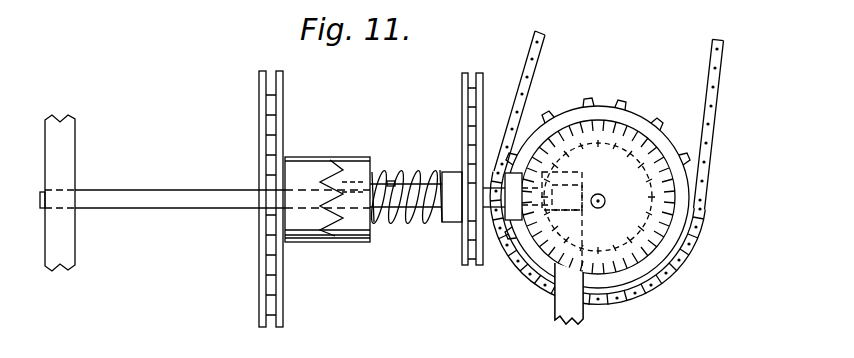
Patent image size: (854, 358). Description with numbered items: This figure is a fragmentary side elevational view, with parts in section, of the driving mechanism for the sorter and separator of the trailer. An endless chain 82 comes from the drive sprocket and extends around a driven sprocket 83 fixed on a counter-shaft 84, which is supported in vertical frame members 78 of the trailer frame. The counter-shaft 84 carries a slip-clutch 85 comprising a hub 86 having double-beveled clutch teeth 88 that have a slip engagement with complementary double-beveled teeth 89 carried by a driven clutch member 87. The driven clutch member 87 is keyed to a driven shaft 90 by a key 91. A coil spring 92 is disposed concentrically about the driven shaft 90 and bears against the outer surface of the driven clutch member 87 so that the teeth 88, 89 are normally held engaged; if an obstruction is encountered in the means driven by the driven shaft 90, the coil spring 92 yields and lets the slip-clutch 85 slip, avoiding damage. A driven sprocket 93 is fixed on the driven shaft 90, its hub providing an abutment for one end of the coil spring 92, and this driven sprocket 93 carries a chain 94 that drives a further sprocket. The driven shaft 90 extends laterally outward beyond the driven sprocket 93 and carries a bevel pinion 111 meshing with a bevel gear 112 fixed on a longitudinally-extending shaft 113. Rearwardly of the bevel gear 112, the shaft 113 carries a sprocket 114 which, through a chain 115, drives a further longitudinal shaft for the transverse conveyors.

The vertical frame members 78 is at (76, 135).
The endless chain 82 is at (258, 86).
The driven sprocket 83 is at (270, 267).
The counter-shaft 84 is at (172, 190).
The slip-clutch 85 is at (330, 157).
The hub 86 is at (318, 237).
The driven clutch member 87 is at (356, 245).
The double-beveled clutch teeth 88 is at (330, 167).
The complementary double-beveled teeth 89 is at (343, 173).
The driven shaft 90 is at (398, 227).
The key 91 is at (393, 178).
The coil spring 92 is at (422, 175).
The driven sprocket 93 is at (475, 247).
The chain 94 is at (486, 73).
The bevel pinion 111 is at (546, 108).
The bevel gear 112 is at (636, 128).
The longitudinally-extending shaft 113 is at (602, 206).
The sprocket 114 is at (603, 112).
The chain 115 is at (714, 47).